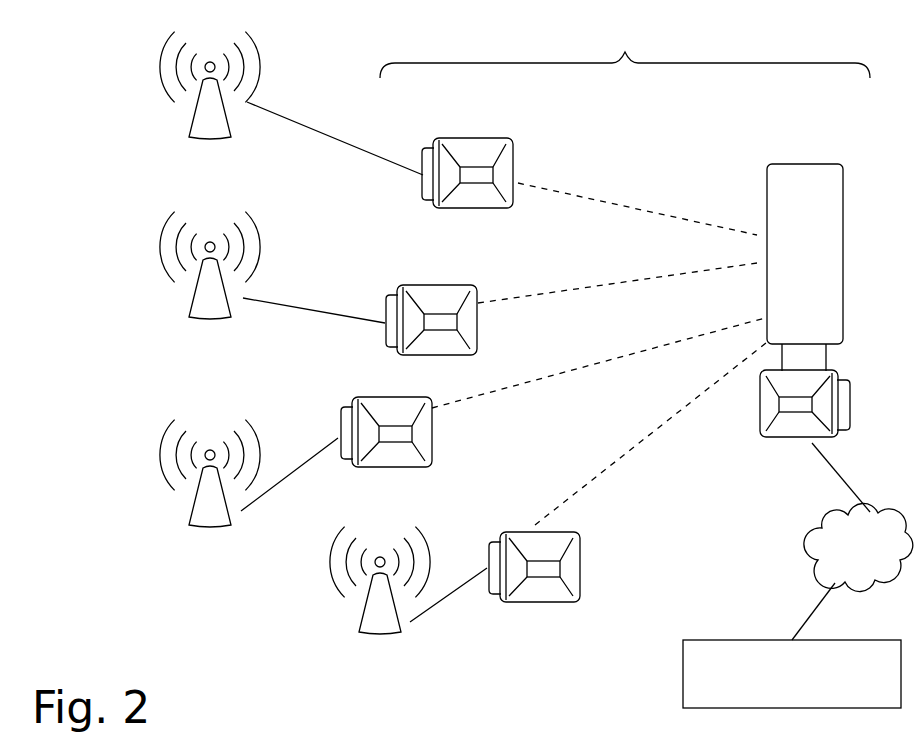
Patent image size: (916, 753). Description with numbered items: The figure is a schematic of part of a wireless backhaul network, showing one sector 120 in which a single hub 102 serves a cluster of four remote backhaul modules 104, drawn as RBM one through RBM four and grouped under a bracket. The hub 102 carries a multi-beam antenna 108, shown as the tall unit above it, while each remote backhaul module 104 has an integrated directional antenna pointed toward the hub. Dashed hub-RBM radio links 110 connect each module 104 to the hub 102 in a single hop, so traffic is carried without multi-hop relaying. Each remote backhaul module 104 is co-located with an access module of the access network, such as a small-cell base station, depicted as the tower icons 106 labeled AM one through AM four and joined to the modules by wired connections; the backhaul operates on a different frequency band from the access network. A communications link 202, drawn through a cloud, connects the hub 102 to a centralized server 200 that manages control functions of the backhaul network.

The hub module 102 is at (831, 403).
The remote backhaul module 104 is at (485, 342).
The asset marker (AM) antenna 106 is at (279, 347).
The multi-beam antenna 108 is at (823, 267).
The hub-RBM radio link 110 is at (599, 351).
The sector 120 is at (625, 49).
The centralized server 200 is at (792, 645).
The communications link 202 is at (858, 517).